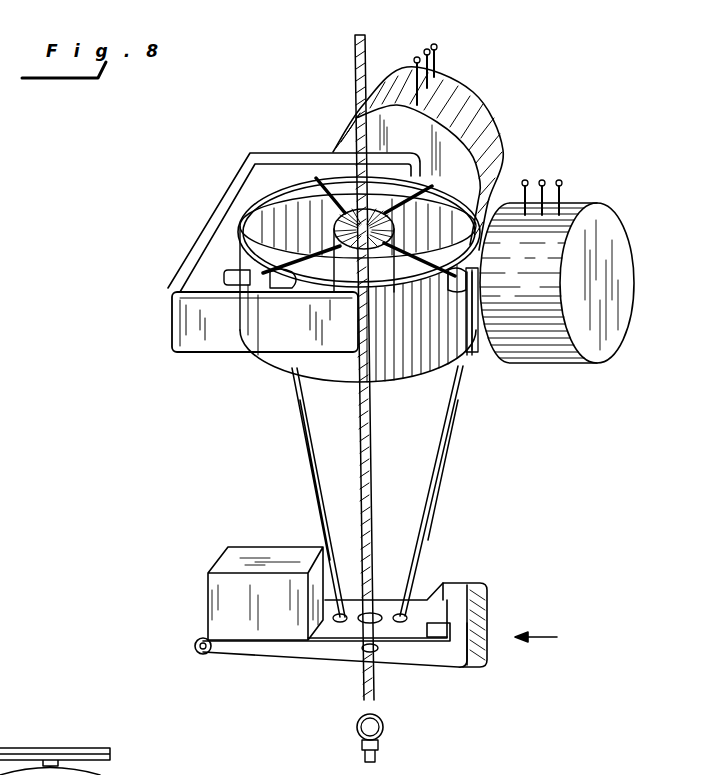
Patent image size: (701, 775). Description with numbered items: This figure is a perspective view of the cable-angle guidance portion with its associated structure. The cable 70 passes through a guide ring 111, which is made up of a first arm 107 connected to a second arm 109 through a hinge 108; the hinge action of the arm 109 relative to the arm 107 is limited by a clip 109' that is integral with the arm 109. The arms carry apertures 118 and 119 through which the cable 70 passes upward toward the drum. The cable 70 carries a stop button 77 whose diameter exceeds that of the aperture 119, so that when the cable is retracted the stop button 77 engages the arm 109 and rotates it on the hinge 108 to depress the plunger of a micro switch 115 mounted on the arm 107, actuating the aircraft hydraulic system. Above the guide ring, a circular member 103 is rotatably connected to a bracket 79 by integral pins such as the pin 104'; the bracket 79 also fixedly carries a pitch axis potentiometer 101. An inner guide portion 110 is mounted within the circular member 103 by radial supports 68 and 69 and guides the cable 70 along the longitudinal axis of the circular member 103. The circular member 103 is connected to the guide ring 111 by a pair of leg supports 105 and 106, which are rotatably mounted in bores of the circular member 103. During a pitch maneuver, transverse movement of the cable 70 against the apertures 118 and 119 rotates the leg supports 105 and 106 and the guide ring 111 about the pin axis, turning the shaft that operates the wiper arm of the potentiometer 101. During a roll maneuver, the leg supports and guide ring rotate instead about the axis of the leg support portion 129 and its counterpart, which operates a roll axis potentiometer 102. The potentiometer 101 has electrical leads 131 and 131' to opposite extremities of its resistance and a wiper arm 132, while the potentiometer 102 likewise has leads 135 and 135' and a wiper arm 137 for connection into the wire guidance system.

The cable 70 is at (356, 58).
The pitch axis potentiometer 101 is at (478, 100).
The electrical lead 131 is at (396, 77).
The wiper arm 132 is at (426, 49).
The electrical lead 131' is at (457, 56).
The leg support portion 129 is at (225, 228).
The bracket 79 is at (176, 327).
The radial support 69 is at (358, 288).
The radial support 68 is at (335, 175).
The inner guide portion 110 is at (378, 213).
The circular member 103 is at (466, 348).
The roll axis potentiometer 102 is at (603, 358).
The electrical lead 135 is at (528, 188).
The wiper arm 137 is at (544, 181).
The electrical lead 135' is at (581, 191).
The leg support 105 is at (306, 440).
The leg support 106 is at (434, 440).
The first arm 107 is at (421, 598).
The aperture 118 is at (378, 605).
The clip 109' is at (488, 618).
The second arm 109 is at (335, 656).
The hinge 108 is at (201, 637).
The aperture 119 is at (362, 650).
The micro switch 115 is at (218, 566).
The stop button 77 is at (382, 722).
The guide ring 111 is at (554, 643).
The pin or shaft 104' is at (55, 747).